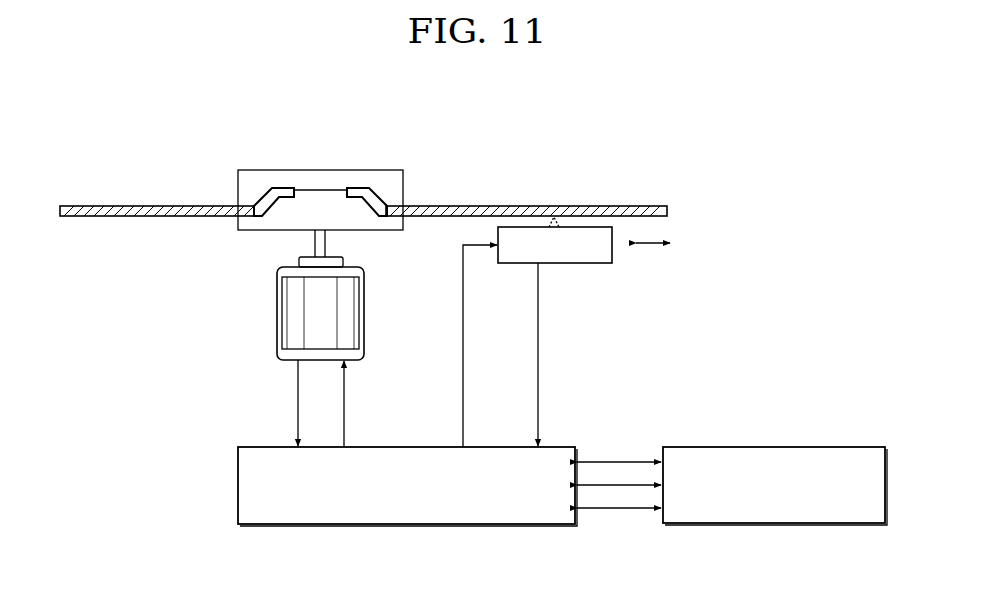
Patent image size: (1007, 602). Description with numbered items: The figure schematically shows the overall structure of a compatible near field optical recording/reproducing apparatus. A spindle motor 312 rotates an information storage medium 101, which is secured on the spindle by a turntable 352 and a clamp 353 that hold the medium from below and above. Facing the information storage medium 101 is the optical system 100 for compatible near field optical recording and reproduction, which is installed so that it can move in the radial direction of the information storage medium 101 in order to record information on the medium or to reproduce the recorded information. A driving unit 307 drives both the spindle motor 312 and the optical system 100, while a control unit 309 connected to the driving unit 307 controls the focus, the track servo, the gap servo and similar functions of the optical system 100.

The optical system 100 is at (583, 263).
The information storage medium 101 is at (633, 207).
The driving unit 307 is at (489, 525).
The control unit 309 is at (840, 524).
The spindle motor 312 is at (357, 312).
The turntable 352 is at (262, 232).
The clamp 353 is at (372, 175).